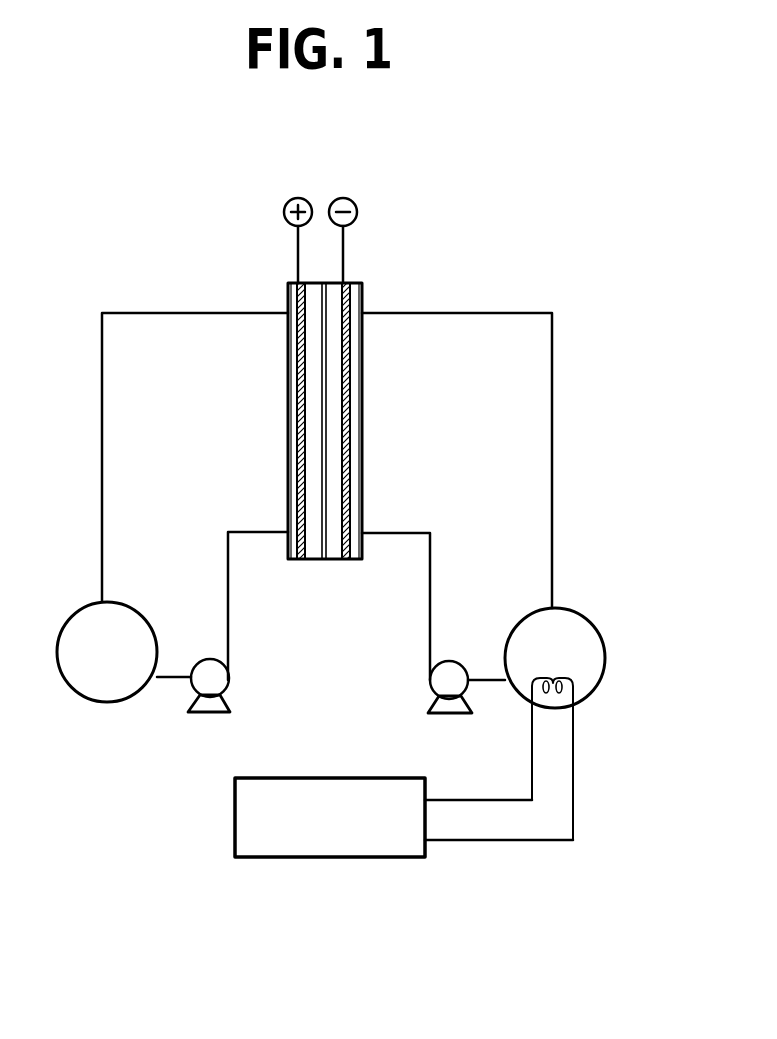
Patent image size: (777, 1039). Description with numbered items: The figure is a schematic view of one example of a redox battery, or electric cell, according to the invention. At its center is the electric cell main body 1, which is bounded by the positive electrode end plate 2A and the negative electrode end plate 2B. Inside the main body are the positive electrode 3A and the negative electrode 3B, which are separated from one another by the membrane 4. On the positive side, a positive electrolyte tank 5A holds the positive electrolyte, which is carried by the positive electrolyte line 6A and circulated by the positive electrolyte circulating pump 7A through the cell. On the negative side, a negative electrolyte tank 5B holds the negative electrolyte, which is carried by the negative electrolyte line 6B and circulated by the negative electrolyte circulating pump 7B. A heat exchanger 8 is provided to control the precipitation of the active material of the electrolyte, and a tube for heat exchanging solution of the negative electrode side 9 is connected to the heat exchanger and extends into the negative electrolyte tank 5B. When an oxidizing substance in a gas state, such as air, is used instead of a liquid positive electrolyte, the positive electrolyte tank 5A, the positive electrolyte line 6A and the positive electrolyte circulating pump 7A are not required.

The electric cell main body 1 is at (363, 283).
The positive electrode end plate 2A is at (288, 420).
The negative electrode end plate 2B is at (363, 405).
The positive electrode 3A is at (302, 560).
The negative electrode 3B is at (347, 560).
The membrane 4 is at (327, 465).
The positive electrolyte tank 5A is at (107, 652).
The negative electrolyte tank 5B is at (555, 658).
The positive electrolyte line 6A is at (228, 565).
The negative electrolyte line 6B is at (610, 562).
The positive electrolyte circulating pump 7A is at (232, 702).
The negative electrolyte circulating pump 7B is at (472, 705).
The heat exchanger 8 is at (330, 817).
The tube for heat exchanging solution of negative electrode side 9 is at (552, 700).